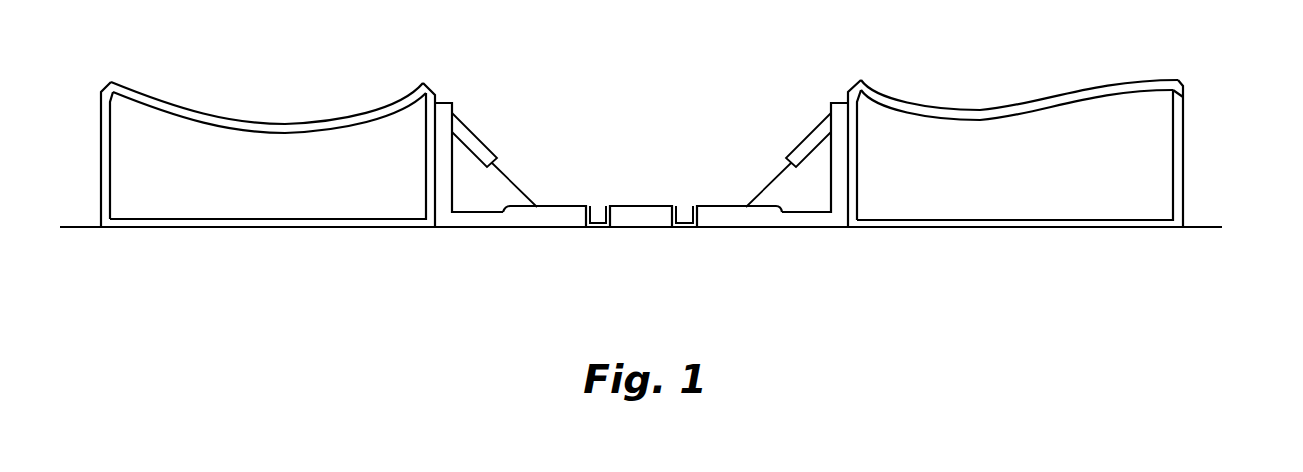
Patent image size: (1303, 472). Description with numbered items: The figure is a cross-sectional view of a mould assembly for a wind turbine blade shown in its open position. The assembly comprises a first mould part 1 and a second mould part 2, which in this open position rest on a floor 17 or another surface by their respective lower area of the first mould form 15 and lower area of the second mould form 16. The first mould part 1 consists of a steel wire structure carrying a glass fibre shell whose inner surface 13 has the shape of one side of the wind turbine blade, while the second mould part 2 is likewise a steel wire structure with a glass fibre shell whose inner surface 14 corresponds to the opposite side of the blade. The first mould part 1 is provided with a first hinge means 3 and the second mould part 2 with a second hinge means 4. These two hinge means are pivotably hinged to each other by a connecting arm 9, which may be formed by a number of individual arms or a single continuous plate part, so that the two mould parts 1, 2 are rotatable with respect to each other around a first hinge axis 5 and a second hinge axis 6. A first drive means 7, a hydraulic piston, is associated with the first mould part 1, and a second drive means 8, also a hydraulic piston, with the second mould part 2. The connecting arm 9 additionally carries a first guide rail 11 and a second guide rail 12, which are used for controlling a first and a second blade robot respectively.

The first mould part 1 is at (255, 151).
The second mould part 2 is at (1015, 176).
The first hinge means 3 is at (441, 221).
The second hinge means 4 is at (829, 222).
The first hinge axis 5 is at (500, 220).
The second hinge axis 6 is at (786, 219).
The first drive means 7 is at (468, 134).
The second drive means 8 is at (805, 142).
The connecting arm 9 is at (642, 232).
The first guide rail 11 is at (600, 228).
The second guide rail 12 is at (690, 230).
The inner surface of the first mould form 13 is at (180, 103).
The inner surface of the second mould form 14 is at (1047, 98).
The lower area of the first mould form 15 is at (212, 228).
The lower area of the second mould form 16 is at (953, 228).
The floor 17 is at (1200, 228).